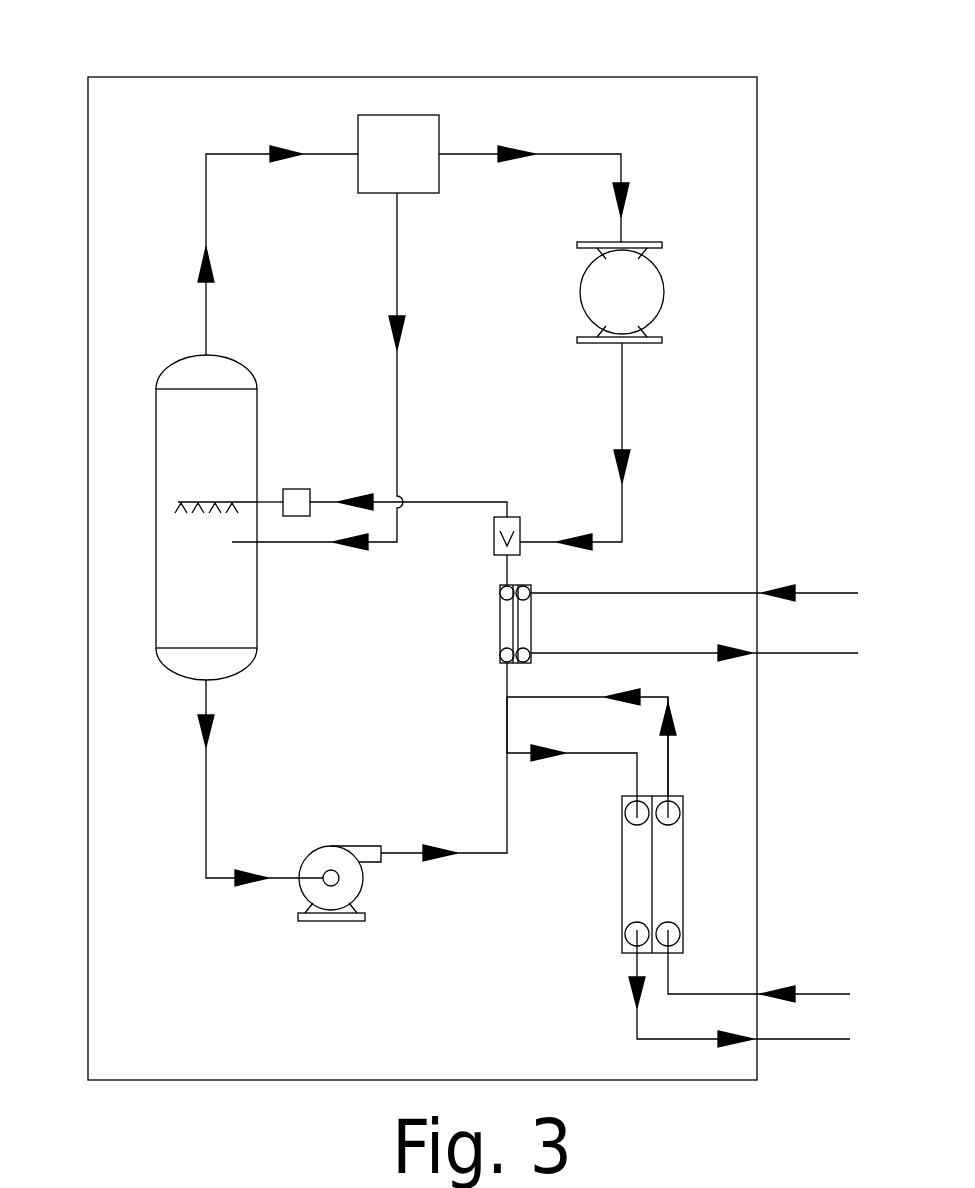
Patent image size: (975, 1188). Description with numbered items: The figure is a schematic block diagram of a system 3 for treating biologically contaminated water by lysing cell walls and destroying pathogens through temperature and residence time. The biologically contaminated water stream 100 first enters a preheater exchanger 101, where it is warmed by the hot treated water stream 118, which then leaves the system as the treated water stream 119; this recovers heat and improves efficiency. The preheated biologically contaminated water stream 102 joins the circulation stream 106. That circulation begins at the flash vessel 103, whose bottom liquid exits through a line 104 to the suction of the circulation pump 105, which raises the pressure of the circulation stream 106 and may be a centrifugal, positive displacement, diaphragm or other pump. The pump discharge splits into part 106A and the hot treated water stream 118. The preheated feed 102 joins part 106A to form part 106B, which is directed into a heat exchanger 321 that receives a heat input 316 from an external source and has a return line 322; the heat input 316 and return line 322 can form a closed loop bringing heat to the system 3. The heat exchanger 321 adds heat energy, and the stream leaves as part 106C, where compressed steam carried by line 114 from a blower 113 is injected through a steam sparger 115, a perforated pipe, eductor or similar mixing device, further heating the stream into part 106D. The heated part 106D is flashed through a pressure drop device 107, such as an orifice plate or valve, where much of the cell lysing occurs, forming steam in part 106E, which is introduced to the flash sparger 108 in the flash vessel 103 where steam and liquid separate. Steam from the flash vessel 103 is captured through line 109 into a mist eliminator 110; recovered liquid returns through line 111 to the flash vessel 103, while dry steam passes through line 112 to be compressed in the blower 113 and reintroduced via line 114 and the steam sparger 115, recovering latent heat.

The system 3 is at (405, 77).
The biologically contaminated water stream 100 is at (762, 977).
The preheater exchanger 101 is at (682, 874).
The preheated biologically contaminated water stream 102 is at (704, 746).
The flash vessel 103 is at (206, 517).
The line 104 is at (260, 783).
The circulation pump 105 is at (339, 883).
The circulation stream 106 is at (476, 853).
The part of the main circulation stream 106A is at (507, 728).
The part of the main circulation stream 106B is at (507, 683).
The part of the main circulation stream 106C is at (507, 570).
The part of the main circulation stream 106D is at (416, 490).
The part of the circulation stream 106E is at (268, 502).
The pressure drop device 107 is at (311, 490).
The flash sparger 108 is at (197, 498).
The line 109 is at (278, 233).
The mist eliminator 110 is at (398, 154).
The line 111 is at (347, 371).
The line 112 is at (534, 177).
The blower 113 is at (620, 292).
The line 114 is at (603, 446).
The steam sparger 115 is at (538, 522).
The hot treated water stream 118 is at (587, 742).
The treated water stream 119 is at (743, 1000).
The heat input 316 is at (695, 583).
The heat exchanger 321 is at (546, 624).
The return line 322 is at (695, 647).